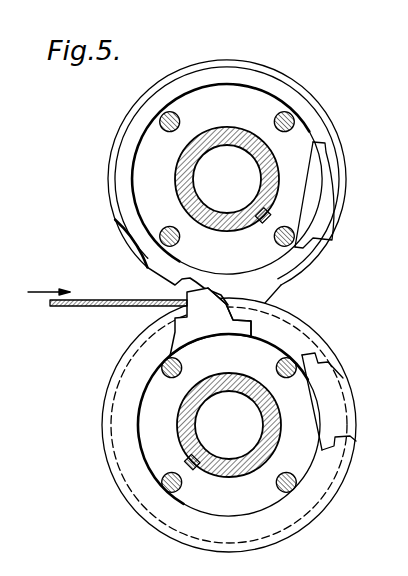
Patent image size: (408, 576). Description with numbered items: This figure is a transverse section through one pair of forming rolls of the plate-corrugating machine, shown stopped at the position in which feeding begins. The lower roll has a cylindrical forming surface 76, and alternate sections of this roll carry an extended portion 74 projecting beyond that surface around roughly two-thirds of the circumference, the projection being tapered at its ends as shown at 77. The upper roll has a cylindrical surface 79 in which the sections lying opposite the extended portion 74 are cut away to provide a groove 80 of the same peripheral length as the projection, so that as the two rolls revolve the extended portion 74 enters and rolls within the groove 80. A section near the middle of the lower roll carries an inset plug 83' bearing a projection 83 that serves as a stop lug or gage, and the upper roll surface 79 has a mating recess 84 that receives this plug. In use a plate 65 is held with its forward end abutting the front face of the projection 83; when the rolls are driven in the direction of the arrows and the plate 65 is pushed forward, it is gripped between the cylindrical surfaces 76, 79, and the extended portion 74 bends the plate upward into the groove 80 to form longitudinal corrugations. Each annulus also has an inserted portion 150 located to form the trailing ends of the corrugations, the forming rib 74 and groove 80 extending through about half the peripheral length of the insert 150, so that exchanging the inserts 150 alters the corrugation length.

The plate 65 is at (93, 307).
The extended portion 74 is at (102, 424).
The cylindrical forming surface 76 is at (293, 337).
The tapered ends 77 is at (139, 344).
The cylindrical surface 79 is at (293, 265).
The groove 80 is at (312, 100).
The projection 83 is at (185, 314).
The inset plug 83' is at (262, 312).
The mating recess 84 is at (193, 285).
The inserted portion 150 is at (330, 185).